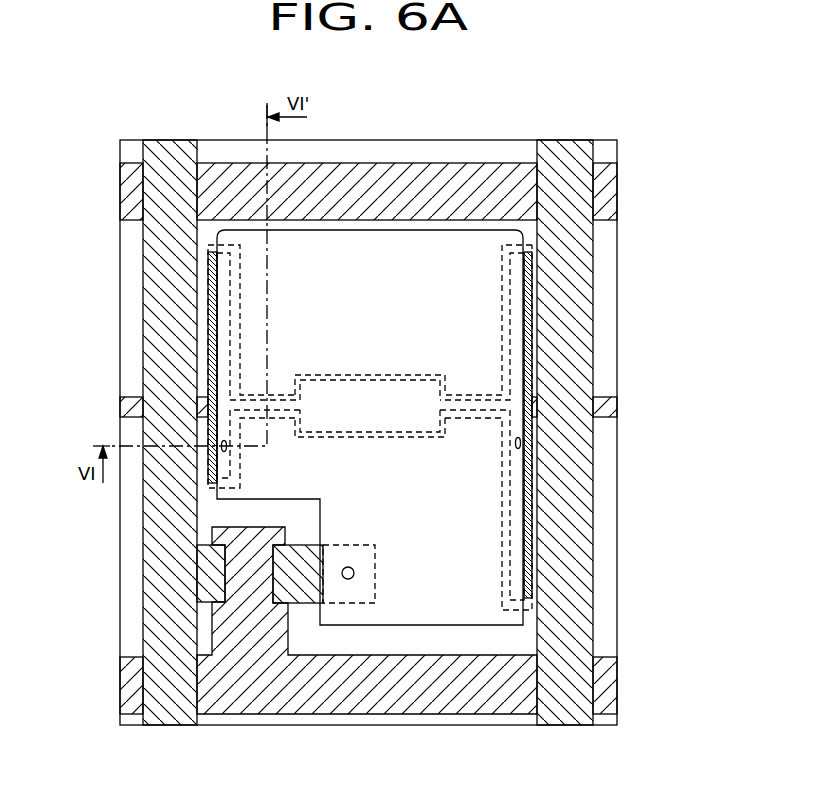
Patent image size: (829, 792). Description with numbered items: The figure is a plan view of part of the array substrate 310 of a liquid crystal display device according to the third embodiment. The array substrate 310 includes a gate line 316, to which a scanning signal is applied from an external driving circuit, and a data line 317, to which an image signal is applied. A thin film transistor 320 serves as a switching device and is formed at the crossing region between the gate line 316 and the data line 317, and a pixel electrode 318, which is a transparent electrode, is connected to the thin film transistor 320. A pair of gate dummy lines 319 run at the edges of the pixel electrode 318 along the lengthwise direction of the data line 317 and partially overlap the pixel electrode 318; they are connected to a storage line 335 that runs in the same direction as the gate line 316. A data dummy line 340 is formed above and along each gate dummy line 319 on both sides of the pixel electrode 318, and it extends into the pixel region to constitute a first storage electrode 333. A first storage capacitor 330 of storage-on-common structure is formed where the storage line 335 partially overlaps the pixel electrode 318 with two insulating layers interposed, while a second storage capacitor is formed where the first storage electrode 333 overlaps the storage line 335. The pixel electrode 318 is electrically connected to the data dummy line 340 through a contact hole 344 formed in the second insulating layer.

The array substrate 310 is at (628, 142).
The gate line 316 is at (607, 683).
The data line 317 is at (565, 525).
The pixel electrode 318 is at (470, 322).
The gate dummy line 319 is at (213, 483).
The thin film transistor 320 is at (205, 535).
The first storage capacitor 330 is at (372, 352).
The first storage electrode 333 is at (401, 385).
The storage line 335 is at (616, 400).
The data dummy line 340 is at (205, 253).
The contact hole 344 is at (525, 443).